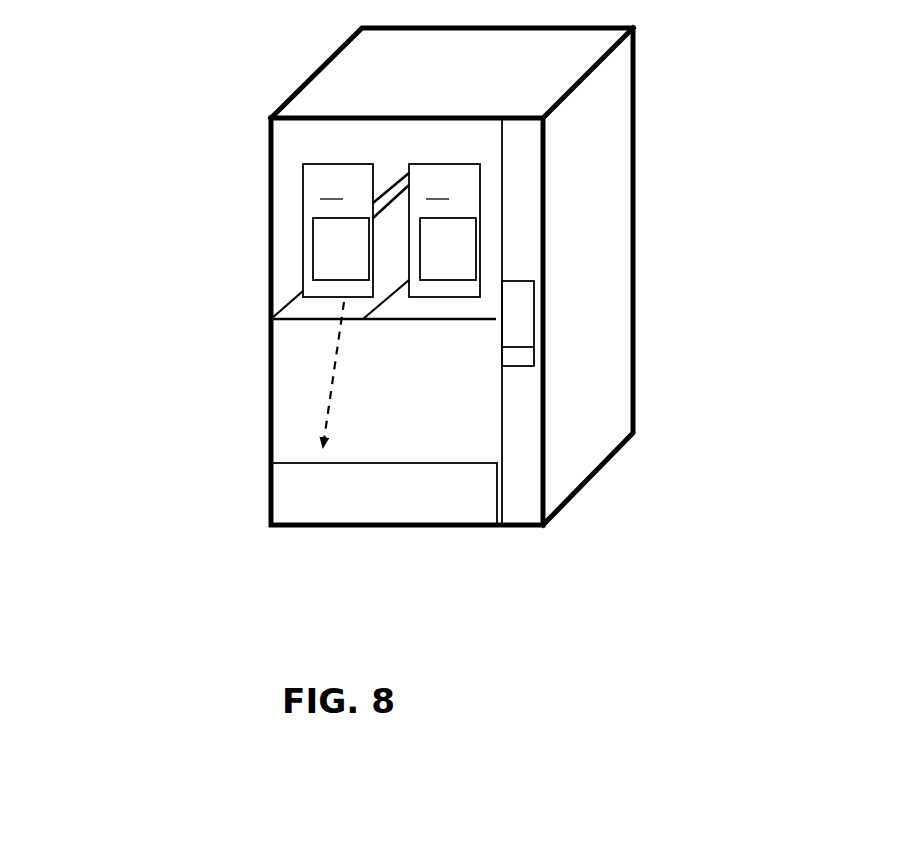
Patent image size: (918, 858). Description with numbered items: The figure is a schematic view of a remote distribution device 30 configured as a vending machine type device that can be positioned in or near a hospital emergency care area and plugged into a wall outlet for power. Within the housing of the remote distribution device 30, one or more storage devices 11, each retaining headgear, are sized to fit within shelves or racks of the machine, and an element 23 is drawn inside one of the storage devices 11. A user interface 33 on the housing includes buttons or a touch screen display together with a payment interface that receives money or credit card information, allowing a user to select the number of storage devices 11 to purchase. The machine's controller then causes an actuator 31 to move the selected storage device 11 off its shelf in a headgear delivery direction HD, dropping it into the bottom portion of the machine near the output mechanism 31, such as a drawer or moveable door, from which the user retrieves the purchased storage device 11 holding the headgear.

The remote distribution device 30 is at (185, 185).
The storage device 11 is at (391, 230).
The battery cell 23 is at (336, 253).
The output mechanism 31 is at (390, 191).
The user interface 33 is at (520, 320).
The headgear delivery direction HD is at (337, 380).